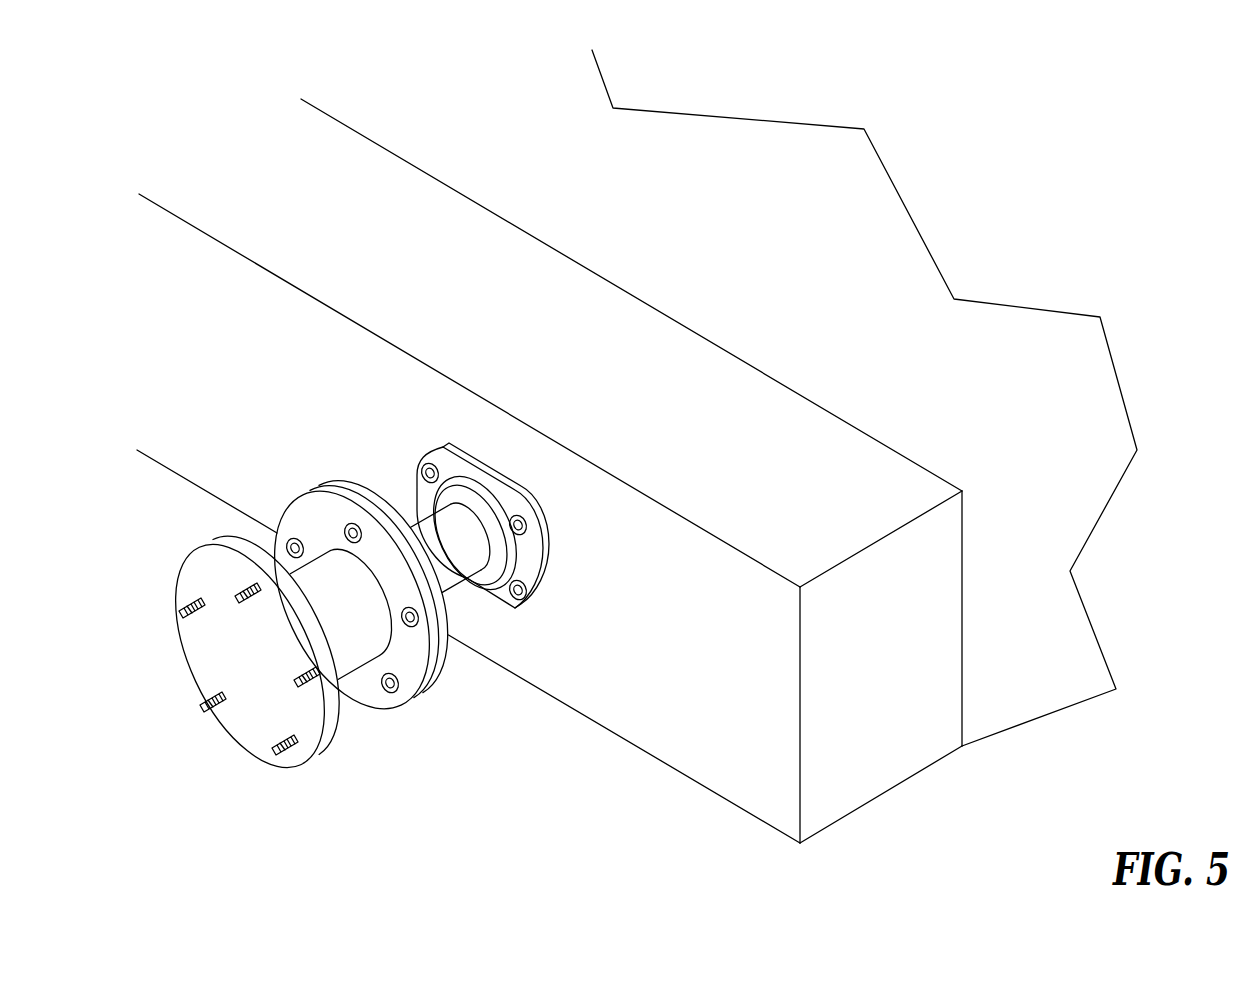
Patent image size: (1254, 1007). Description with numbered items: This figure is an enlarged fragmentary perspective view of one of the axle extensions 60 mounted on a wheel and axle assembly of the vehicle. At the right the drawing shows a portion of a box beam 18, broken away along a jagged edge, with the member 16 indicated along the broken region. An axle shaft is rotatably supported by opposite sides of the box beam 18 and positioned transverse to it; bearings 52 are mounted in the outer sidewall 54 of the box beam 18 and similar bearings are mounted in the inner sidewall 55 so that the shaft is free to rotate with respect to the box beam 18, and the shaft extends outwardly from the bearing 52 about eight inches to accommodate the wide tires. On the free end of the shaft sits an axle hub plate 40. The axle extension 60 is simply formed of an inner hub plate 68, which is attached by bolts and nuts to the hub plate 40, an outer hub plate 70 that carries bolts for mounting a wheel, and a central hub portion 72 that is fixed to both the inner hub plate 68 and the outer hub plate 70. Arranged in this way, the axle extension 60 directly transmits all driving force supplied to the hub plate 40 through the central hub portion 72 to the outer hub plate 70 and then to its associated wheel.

The frame 16 is at (902, 283).
The box beam 18 is at (743, 717).
The axle hub plate 40 is at (457, 640).
The bearing 52 is at (527, 567).
The outer sidewall 54 is at (675, 677).
The inner sidewall 55 is at (962, 679).
The axle extension 60 is at (314, 746).
The inner hub plate 68 is at (407, 682).
The outer hub plate 70 is at (248, 715).
The central hub portion 72 is at (357, 640).